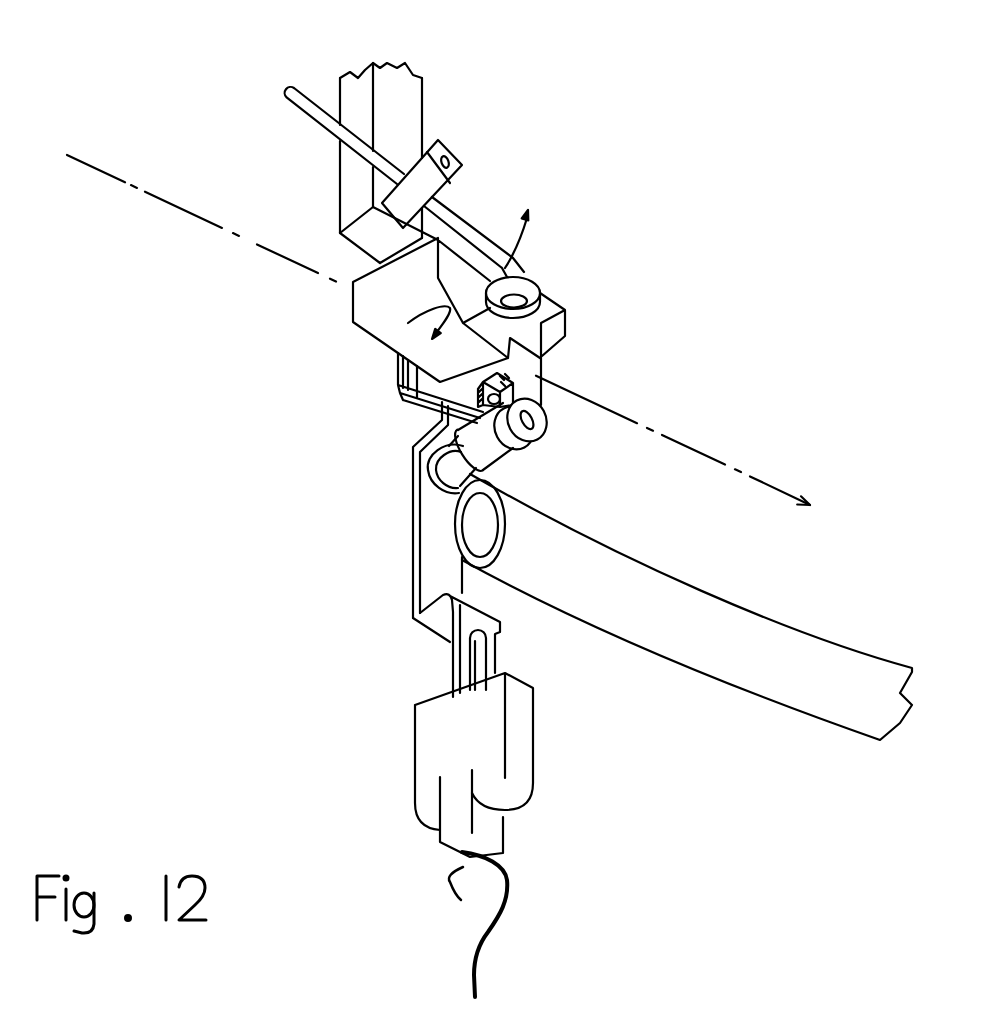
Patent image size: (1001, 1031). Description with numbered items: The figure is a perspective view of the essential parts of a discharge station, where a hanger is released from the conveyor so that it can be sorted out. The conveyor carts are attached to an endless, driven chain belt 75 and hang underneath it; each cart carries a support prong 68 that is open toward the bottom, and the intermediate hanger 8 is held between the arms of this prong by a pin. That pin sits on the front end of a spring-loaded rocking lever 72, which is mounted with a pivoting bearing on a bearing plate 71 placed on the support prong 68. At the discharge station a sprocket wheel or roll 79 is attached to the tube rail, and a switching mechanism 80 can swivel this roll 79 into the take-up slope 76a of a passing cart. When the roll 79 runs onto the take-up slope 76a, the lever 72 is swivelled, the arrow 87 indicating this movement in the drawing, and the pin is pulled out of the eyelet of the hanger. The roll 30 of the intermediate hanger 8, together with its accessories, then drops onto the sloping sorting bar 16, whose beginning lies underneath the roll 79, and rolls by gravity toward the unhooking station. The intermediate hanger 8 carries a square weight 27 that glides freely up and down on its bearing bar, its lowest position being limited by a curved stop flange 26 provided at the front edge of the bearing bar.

The intermediate hanger 8 is at (409, 539).
The sloping sorting bar 16 is at (763, 685).
The curved stop flange 26 is at (483, 972).
The weight 27 is at (520, 767).
The roll 30 is at (538, 443).
The support prong 68 is at (398, 395).
The bearing plate 71 is at (562, 318).
The rocking lever 72 is at (368, 286).
The chain belt 75 is at (638, 425).
The take-up slope 76a is at (472, 246).
The roll 79 is at (541, 280).
The switching mechanism 80 is at (392, 93).
The rotation arrow 87 is at (382, 347).